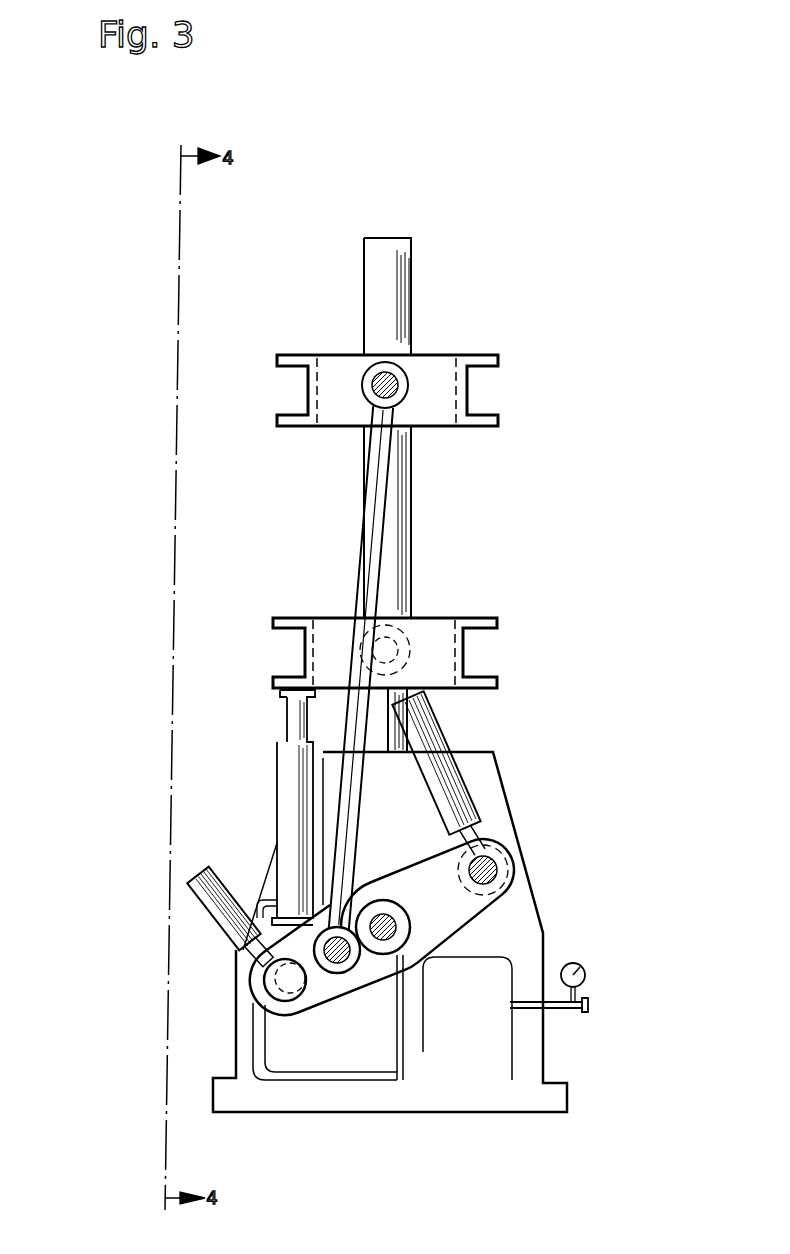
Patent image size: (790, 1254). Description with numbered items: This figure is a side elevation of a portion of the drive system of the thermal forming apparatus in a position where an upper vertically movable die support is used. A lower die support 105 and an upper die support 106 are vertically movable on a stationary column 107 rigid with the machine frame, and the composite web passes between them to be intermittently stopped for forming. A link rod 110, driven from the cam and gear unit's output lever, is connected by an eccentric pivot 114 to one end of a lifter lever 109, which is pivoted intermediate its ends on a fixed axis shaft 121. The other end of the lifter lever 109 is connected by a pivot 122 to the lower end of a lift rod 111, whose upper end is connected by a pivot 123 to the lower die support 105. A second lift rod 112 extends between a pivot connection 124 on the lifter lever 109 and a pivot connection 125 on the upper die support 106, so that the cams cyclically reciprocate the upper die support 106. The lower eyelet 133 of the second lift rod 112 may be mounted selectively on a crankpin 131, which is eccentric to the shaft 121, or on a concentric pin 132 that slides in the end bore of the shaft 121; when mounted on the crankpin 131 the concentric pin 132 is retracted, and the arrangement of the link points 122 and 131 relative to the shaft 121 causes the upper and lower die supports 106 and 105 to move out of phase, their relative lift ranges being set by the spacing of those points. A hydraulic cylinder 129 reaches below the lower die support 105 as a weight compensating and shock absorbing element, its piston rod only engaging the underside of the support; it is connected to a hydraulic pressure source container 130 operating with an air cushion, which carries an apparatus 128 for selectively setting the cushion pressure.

The lower die support 105 is at (428, 632).
The upper die support 106 is at (453, 367).
The stationary column 107 is at (405, 462).
The lifter lever 109 is at (487, 918).
The link rod 110 is at (200, 884).
The lift rod 111 is at (430, 733).
The second lift rod 112 is at (372, 516).
The eccentric pivot 114 is at (270, 993).
The fixed axis shaft 121 is at (402, 932).
The pivot 122 is at (487, 865).
The pivot 123 is at (395, 635).
The pivot connection 124 is at (352, 983).
The pivot connection 125 is at (391, 380).
The pressure setting apparatus 128 is at (575, 1018).
The hydraulic cylinder 129 is at (287, 750).
The hydraulic pressure source container 130 is at (485, 1082).
The crankpin 131 is at (340, 963).
The concentric pin 132 is at (385, 903).
The lower eyelet 133 is at (328, 967).